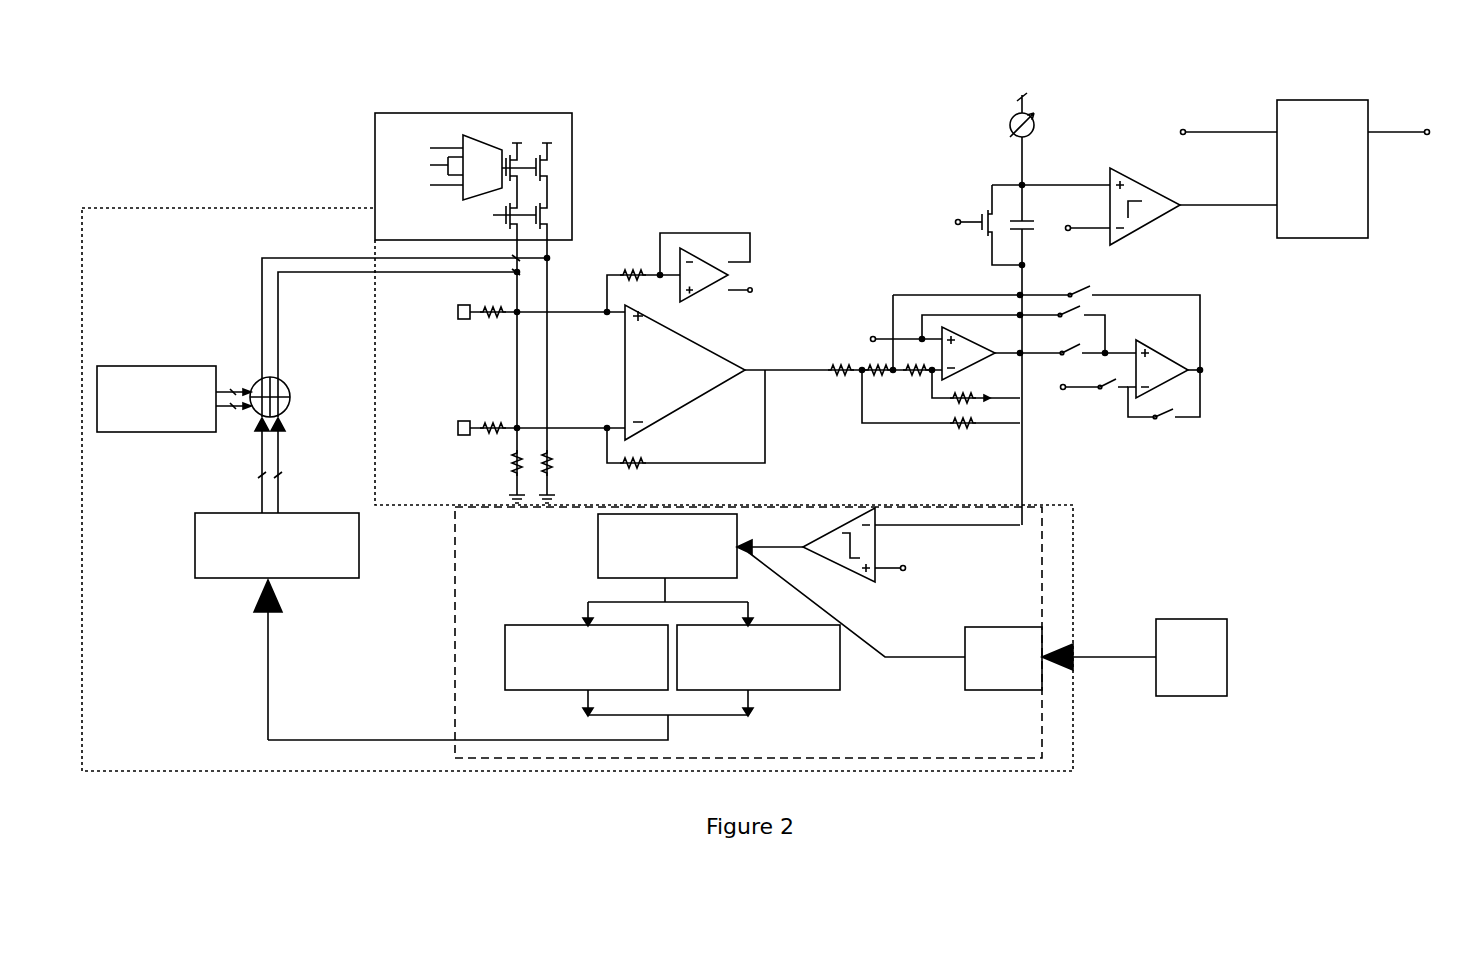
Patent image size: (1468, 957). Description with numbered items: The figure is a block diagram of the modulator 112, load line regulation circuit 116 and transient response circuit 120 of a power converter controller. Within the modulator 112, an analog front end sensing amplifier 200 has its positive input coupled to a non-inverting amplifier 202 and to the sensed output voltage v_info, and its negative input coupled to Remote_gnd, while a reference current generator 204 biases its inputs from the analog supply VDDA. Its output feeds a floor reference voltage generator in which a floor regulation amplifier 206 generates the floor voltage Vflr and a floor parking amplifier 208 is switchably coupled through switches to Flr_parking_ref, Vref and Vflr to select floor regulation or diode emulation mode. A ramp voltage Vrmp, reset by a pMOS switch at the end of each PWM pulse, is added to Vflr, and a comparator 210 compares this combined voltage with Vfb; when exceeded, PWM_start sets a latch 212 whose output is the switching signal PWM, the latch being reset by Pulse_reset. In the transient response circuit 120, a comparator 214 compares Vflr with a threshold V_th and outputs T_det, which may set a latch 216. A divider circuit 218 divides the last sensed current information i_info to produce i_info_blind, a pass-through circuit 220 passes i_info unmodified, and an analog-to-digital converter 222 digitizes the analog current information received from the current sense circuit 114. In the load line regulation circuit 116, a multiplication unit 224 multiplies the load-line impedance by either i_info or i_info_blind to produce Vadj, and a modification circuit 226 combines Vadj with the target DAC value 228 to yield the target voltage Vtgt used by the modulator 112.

The modulator 112 is at (897, 309).
The current sense circuit 114 is at (1134, 657).
The load line regulation circuit 116 is at (654, 489).
The transient response circuit 120 is at (748, 632).
The analog front end sensing amplifier 200 is at (685, 372).
The non-inverting amplifier 202 is at (473, 176).
The reference current generator 204 is at (706, 267).
The floor regulation amplifier 206 is at (968, 353).
The floor parking amplifier 208 is at (1162, 369).
The comparator 210 is at (1142, 182).
The latch 212 is at (1284, 169).
The comparator 214 is at (837, 564).
The latch 216 is at (667, 546).
The divider circuit 218 is at (586, 657).
The pass-through circuit 220 is at (758, 657).
The analog-to-digital converter 222 is at (1003, 658).
The multiplication unit 224 is at (277, 579).
The modification circuit 226 is at (283, 382).
The target DAC value 228 is at (174, 399).